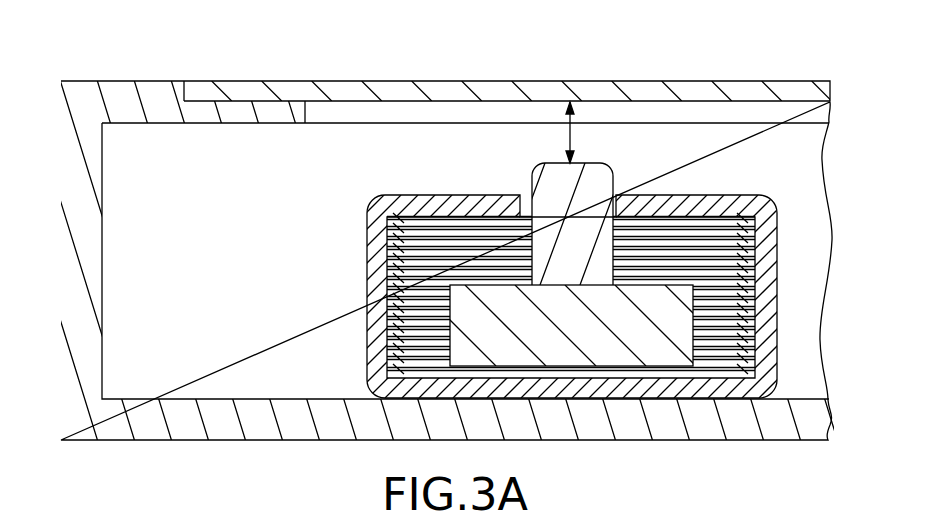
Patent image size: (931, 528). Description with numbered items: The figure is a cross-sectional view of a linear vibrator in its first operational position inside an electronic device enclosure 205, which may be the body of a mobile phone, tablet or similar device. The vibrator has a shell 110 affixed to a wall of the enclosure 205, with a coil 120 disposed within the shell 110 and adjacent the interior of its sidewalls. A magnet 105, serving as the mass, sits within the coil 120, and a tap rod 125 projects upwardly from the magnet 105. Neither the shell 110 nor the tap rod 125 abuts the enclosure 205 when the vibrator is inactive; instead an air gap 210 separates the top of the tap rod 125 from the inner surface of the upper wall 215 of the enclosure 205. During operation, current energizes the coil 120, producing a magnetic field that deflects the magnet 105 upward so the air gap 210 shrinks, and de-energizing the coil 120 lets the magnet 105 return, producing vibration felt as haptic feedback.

The magnet 105 is at (645, 352).
The shell 110 is at (387, 387).
The coil 120 is at (727, 350).
The tap rod 125 is at (598, 193).
The enclosure 205 is at (80, 430).
The air gap 210 is at (570, 127).
The upper wall 215 is at (688, 90).